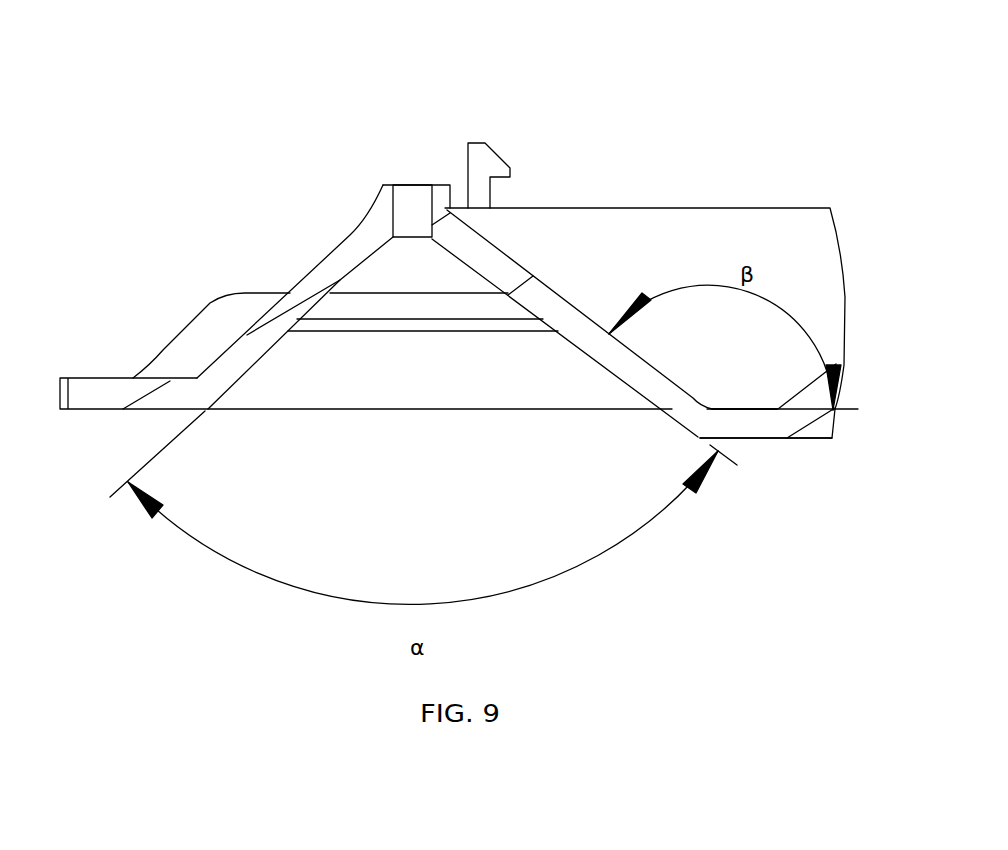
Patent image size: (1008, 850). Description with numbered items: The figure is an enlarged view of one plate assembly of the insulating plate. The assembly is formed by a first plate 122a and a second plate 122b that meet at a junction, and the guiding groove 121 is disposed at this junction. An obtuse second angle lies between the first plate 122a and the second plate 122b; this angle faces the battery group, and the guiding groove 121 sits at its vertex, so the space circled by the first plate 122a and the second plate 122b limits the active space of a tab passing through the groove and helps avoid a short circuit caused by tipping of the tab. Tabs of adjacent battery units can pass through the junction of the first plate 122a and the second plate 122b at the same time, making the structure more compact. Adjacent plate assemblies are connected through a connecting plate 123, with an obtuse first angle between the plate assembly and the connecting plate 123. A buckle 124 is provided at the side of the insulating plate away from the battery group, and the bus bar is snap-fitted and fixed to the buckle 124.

The guiding groove 121 is at (417, 212).
The first plate 122a is at (317, 280).
The second plate 122b is at (585, 323).
The connecting plate 123 is at (757, 433).
The buckle 124 is at (492, 165).